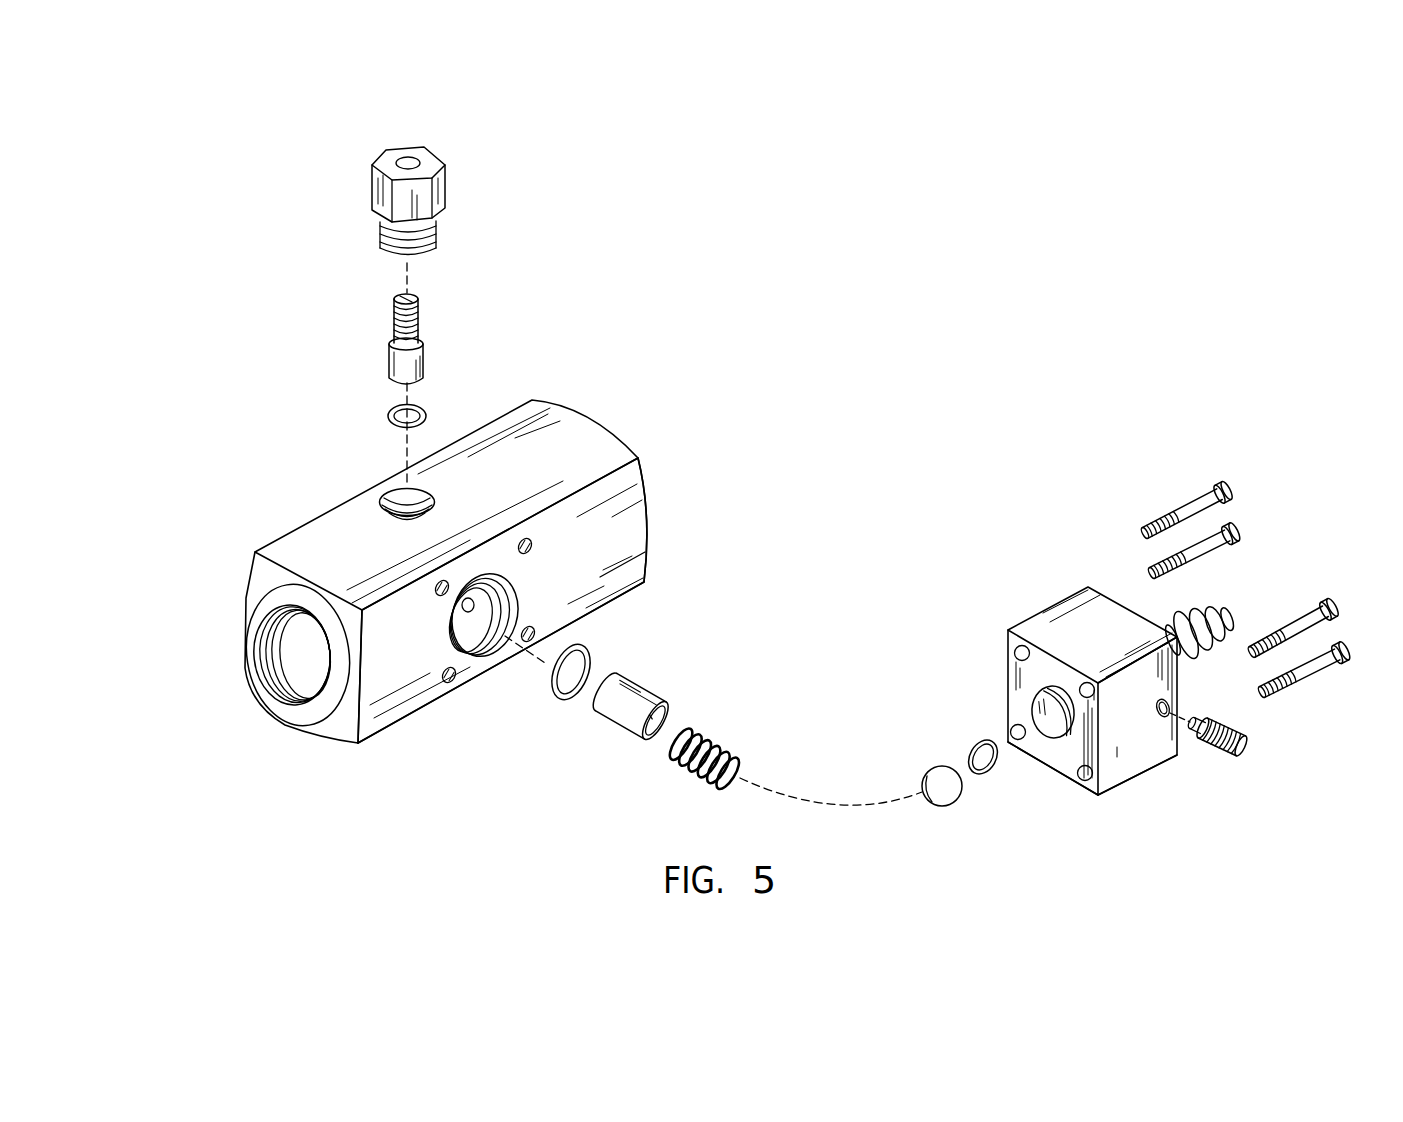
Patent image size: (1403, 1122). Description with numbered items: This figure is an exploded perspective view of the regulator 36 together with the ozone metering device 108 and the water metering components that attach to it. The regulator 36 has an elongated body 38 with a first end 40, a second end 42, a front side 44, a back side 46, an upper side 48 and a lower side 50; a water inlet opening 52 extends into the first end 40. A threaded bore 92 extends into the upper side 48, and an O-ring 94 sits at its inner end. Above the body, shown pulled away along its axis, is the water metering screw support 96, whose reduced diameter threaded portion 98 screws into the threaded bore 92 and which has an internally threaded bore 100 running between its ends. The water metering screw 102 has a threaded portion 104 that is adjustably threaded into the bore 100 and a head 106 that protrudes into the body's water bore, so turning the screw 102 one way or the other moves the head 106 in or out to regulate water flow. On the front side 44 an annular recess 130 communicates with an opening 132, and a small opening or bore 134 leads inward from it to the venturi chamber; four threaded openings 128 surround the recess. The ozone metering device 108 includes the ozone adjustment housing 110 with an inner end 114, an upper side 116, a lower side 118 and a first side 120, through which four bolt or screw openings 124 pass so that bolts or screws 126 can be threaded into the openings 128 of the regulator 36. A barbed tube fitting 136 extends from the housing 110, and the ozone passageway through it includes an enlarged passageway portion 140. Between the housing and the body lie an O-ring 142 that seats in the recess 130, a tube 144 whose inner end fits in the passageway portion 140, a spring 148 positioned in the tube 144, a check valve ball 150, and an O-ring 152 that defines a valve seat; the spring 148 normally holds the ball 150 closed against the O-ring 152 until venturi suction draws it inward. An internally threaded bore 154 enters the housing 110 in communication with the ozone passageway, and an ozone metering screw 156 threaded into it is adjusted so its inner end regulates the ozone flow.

The regulator 36 is at (667, 477).
The elongated body 38 is at (528, 398).
The first end 40 is at (277, 735).
The second end 42 is at (667, 522).
The front side 44 is at (587, 567).
The back side 46 is at (245, 597).
The upper side 48 is at (523, 493).
The lower side 50 is at (383, 743).
The water inlet opening 52 is at (280, 673).
The threaded bore 92 is at (381, 500).
The O-ring 94 is at (392, 413).
The water metering screw support 96 is at (450, 183).
The reduced diameter threaded portion 98 is at (437, 237).
The internally threaded bore 100 is at (403, 157).
The water metering screw 102 is at (430, 317).
The threaded portion 104 is at (398, 322).
The head 106 is at (390, 363).
The ozone metering device 108 is at (1045, 578).
The ozone adjustment housing 110 is at (1034, 606).
The inner end 114 is at (1027, 678).
The upper side 116 is at (1096, 647).
The lower side 118 is at (1065, 793).
The first side 120 is at (1152, 735).
The bolt or screw openings 124 is at (1090, 772).
The bolts or screws 126 is at (1193, 497).
The threaded openings 128 is at (540, 633).
The annular recess 130 is at (472, 657).
The opening 132 is at (602, 575).
The small opening or bore 134 is at (472, 611).
The barbed tube fitting 136 is at (1207, 622).
The enlarged passageway portion 140 is at (1037, 707).
The O-ring 142 is at (593, 667).
The tube 144 is at (653, 693).
The spring 148 is at (708, 740).
The check valve ball 150 is at (935, 807).
The O-ring 152 is at (982, 777).
The internally threaded bore 154 is at (1177, 703).
The ozone metering screw 156 is at (1245, 745).